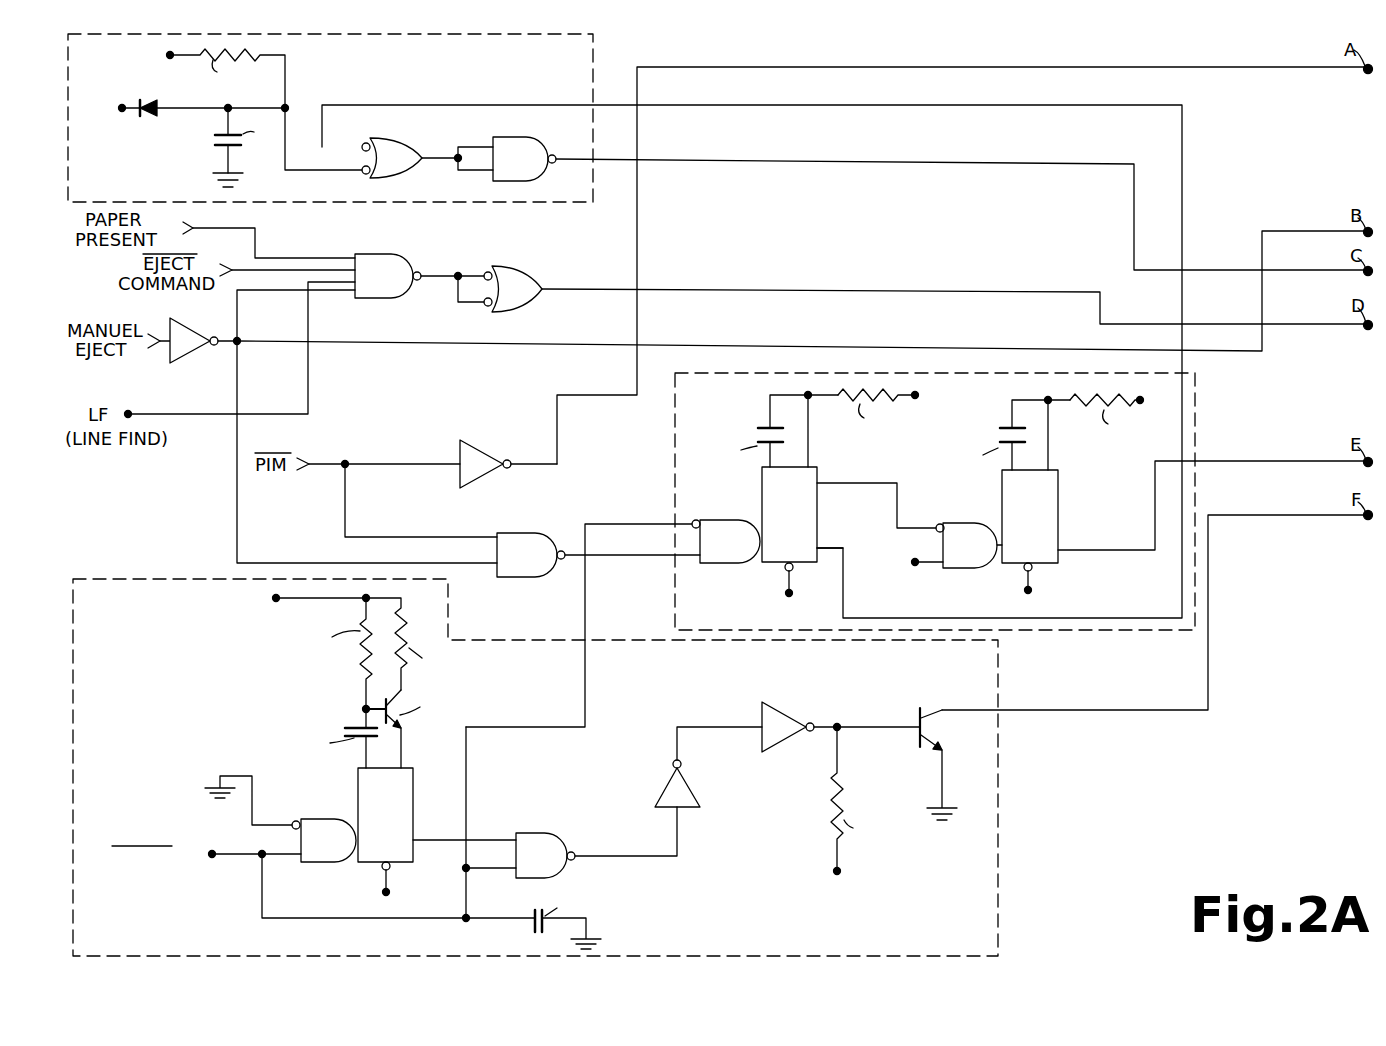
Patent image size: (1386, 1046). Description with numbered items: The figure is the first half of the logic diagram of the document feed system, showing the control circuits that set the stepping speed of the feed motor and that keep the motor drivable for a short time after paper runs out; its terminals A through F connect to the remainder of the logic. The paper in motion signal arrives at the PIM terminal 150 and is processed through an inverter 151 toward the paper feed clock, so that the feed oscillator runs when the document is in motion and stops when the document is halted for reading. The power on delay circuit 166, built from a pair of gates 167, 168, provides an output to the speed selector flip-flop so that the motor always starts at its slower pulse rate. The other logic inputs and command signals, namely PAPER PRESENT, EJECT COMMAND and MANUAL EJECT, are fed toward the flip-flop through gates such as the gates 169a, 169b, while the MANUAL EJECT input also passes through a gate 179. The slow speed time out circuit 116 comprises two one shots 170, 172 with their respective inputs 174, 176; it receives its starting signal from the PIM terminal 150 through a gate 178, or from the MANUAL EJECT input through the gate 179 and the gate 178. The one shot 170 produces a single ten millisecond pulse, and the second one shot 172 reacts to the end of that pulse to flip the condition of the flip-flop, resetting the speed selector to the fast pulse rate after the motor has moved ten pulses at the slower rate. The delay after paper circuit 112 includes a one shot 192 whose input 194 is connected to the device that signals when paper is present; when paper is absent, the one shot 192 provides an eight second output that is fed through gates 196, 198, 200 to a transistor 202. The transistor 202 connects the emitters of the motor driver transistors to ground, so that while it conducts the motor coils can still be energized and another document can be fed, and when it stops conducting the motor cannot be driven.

The delay after paper circuit 112 is at (1000, 791).
The slow speed time out circuit 116 is at (1197, 421).
The PIM terminal 150 is at (346, 462).
The inverter 151 is at (486, 450).
The power on delay circuit 166 is at (563, 206).
The gate 167 is at (397, 139).
The gate 168 is at (530, 143).
The gate 169a is at (398, 256).
The gate 169b is at (508, 275).
The one shot 170 is at (818, 509).
The one shot 172 is at (1062, 517).
The input 174 is at (715, 519).
The input 176 is at (963, 522).
The gate 178 is at (533, 533).
The gate 179 is at (199, 331).
The one shot 192 is at (416, 788).
The input 194 is at (306, 818).
The gate 196 is at (575, 876).
The gate 198 is at (700, 801).
The gate 200 is at (780, 745).
The transistor 202 is at (914, 714).